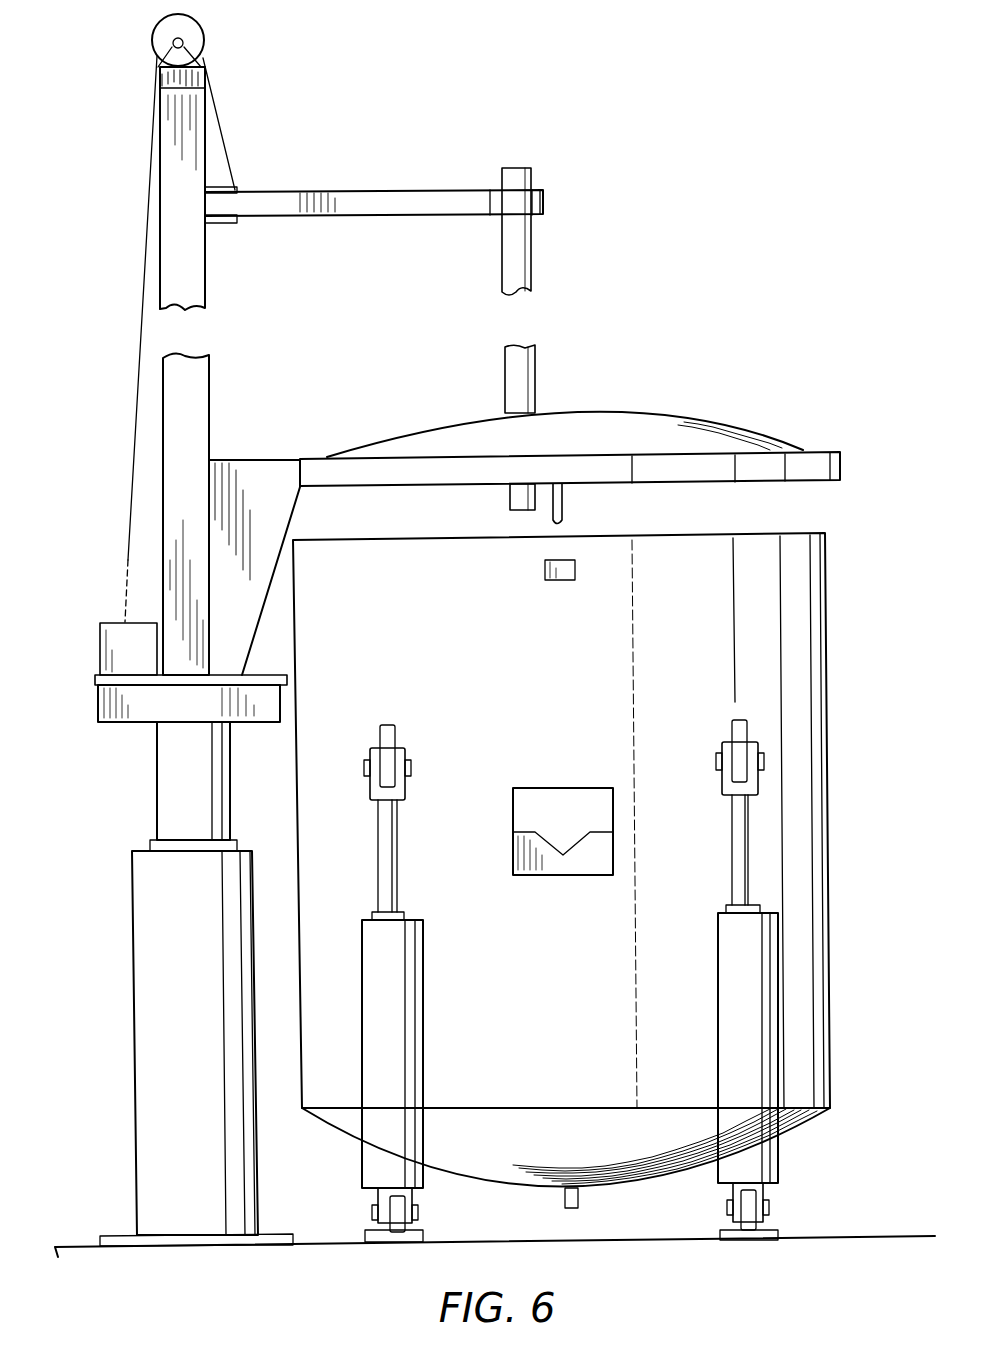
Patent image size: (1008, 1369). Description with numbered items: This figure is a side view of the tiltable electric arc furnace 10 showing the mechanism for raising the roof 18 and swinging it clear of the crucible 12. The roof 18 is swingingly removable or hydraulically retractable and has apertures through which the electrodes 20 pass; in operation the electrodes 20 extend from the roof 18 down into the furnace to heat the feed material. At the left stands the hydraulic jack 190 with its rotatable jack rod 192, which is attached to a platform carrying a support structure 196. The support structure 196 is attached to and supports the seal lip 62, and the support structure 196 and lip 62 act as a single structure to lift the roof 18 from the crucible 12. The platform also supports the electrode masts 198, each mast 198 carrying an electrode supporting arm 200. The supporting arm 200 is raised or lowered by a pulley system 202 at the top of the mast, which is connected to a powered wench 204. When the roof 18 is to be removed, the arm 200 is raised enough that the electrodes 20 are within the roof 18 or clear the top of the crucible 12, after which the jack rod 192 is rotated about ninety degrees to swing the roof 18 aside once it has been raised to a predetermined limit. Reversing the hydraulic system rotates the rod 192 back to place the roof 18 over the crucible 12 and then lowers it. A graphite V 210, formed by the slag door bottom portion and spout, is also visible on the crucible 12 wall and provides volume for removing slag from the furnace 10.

The electric arc furnace 10 is at (822, 621).
The crucible 12 is at (820, 748).
The roof 18 is at (712, 432).
The electrodes 20 is at (568, 142).
The seal lip 62 is at (843, 463).
The hydraulic jack 190 is at (147, 930).
The rotatable jack rod 192 is at (160, 771).
The support structure 196 is at (262, 476).
The electrode mast 198 is at (200, 392).
The electrode supporting arm 200 is at (385, 196).
The pulley system 202 is at (205, 35).
The powered wench 204 is at (113, 625).
The V 210 is at (552, 843).